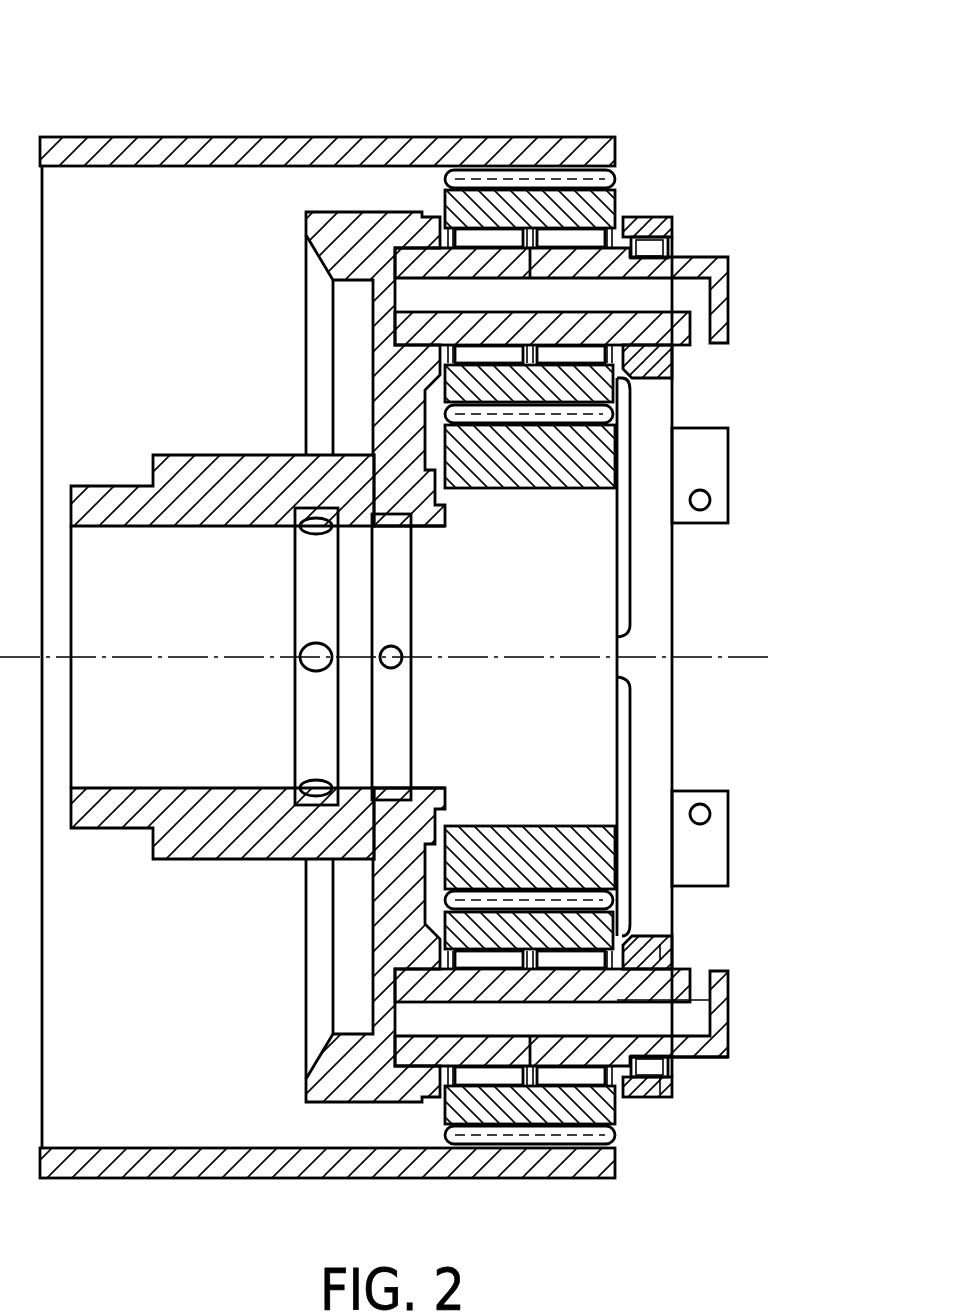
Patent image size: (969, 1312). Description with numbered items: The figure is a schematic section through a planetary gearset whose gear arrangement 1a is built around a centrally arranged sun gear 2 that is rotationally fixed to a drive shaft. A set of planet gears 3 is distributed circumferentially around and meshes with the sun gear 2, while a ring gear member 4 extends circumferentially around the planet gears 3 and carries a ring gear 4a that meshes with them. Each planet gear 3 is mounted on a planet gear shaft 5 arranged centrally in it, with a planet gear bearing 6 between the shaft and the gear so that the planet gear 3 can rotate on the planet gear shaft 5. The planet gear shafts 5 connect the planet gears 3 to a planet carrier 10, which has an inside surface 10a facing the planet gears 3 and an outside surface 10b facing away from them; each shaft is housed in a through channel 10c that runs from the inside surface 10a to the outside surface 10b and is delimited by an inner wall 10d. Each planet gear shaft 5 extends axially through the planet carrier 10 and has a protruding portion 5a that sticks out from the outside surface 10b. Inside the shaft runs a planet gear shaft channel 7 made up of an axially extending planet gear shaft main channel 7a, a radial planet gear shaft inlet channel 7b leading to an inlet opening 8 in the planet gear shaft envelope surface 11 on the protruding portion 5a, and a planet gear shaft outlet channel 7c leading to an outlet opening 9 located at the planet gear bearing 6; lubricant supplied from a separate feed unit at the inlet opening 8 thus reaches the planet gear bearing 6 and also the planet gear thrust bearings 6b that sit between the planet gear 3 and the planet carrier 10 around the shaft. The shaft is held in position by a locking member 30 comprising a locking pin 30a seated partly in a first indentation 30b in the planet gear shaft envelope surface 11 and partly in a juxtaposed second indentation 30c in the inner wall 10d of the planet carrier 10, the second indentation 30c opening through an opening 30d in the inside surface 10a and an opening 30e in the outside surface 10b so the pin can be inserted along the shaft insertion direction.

The gear arrangement 1a is at (690, 72).
The sun gear 2 is at (565, 460).
The planet gears 3 is at (605, 205).
The ring gear member 4 is at (327, 624).
The ring gear 4a is at (255, 137).
The planet gear shafts 5 is at (755, 657).
The protruding portion 5a is at (732, 315).
The planet gear bearings 6 is at (480, 245).
The planet gear thrust bearings 6b is at (600, 235).
The planet gear shaft channel 7 is at (551, 571).
The planet gear shaft main channel 7a is at (438, 297).
The planet gear shaft inlet channel 7b is at (732, 363).
The planet gear shaft outlet channel 7c is at (517, 263).
The inlet opening 8 is at (698, 333).
The outlet opening 9 is at (561, 192).
The planet carrier 10 is at (658, 222).
The inside surface 10a is at (617, 1000).
The outside surface 10b is at (672, 943).
The through channel 10c is at (595, 1073).
The inner wall 10d is at (663, 995).
The planet gear shaft envelope surface 11 is at (672, 962).
The locking member 30 is at (743, 220).
The locking pin 30a is at (672, 1067).
The first indentation 30b is at (718, 1059).
The second indentation 30c is at (663, 1075).
The opening 30d is at (743, 220).
The opening 30e is at (670, 247).